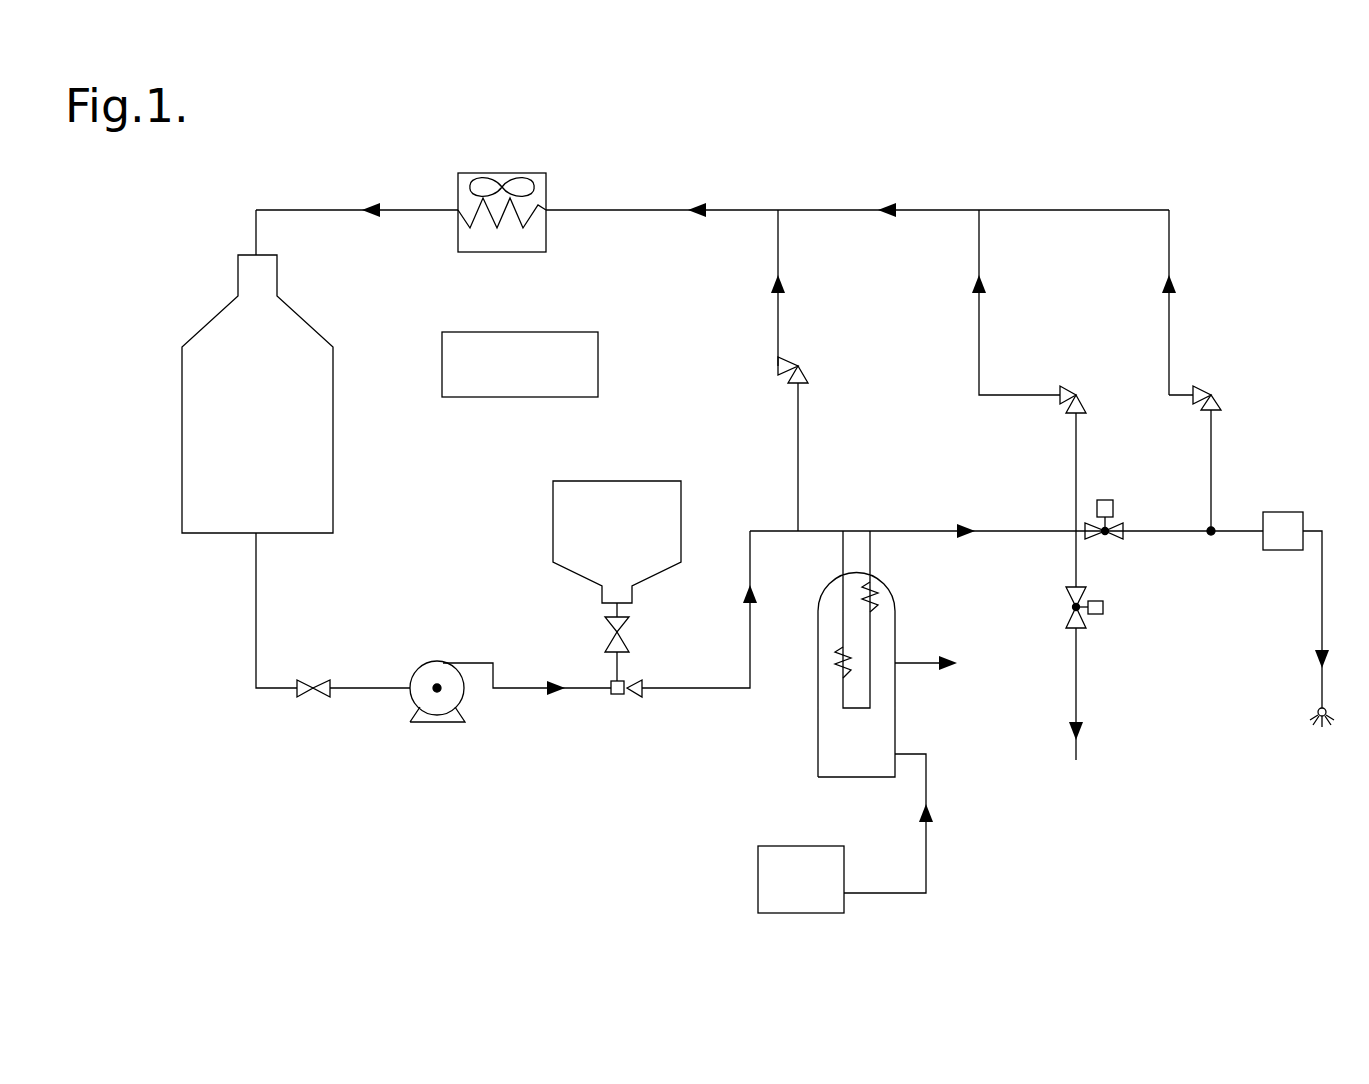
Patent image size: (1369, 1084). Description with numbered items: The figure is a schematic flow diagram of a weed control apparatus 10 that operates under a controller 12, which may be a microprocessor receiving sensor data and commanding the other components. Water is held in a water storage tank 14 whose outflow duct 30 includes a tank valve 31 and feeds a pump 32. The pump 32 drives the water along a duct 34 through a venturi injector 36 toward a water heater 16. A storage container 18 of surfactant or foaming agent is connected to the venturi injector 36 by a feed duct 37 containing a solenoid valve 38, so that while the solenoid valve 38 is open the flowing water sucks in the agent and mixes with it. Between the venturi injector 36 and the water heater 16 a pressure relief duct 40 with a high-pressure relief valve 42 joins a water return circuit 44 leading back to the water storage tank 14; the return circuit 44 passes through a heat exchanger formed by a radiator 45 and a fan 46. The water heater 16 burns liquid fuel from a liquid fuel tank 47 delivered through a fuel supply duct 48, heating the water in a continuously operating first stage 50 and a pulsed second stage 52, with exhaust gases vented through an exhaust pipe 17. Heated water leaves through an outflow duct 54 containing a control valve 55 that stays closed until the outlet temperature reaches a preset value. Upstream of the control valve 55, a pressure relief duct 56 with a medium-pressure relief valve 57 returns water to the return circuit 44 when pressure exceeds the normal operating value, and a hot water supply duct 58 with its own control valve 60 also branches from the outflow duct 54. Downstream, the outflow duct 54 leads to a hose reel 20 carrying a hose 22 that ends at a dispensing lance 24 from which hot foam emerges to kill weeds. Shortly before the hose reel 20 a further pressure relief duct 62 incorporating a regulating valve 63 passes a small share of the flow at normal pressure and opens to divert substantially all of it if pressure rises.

The weed control apparatus 10 is at (1240, 182).
The controller 12 is at (530, 340).
The water storage tank 14 is at (205, 328).
The water heater 16 is at (897, 712).
The exhaust pipe 17 is at (930, 661).
The storage container 18 is at (570, 530).
The hose reel 20 is at (1285, 538).
The hose 22 is at (1320, 612).
The dispensing lance 24 is at (1316, 711).
The outflow duct 30 is at (358, 690).
The tank valve 31 is at (310, 686).
The pump 32 is at (415, 695).
The duct 34 is at (590, 688).
The venturi injector 36 is at (624, 697).
The feed duct 37 is at (620, 668).
The solenoid valve 38 is at (612, 630).
The pressure relief duct 40 is at (799, 412).
The high-pressure relief valve 42 is at (800, 365).
The water return circuit 44 is at (728, 209).
The radiator 45 is at (520, 227).
The fan 46 is at (533, 182).
The liquid fuel tank 47 is at (762, 875).
The fuel supply duct 48 is at (928, 866).
The first stage 50 is at (835, 657).
The second stage 52 is at (880, 592).
The outflow duct 54 is at (938, 528).
The control valve 55 is at (1115, 522).
The pressure relief duct 56 is at (980, 295).
The medium-pressure relief valve 57 is at (1080, 398).
The hot water supply duct 58 is at (1078, 692).
The control valve 60 is at (1082, 612).
The pressure relief duct 62 is at (1213, 448).
The regulating valve 63 is at (1215, 400).